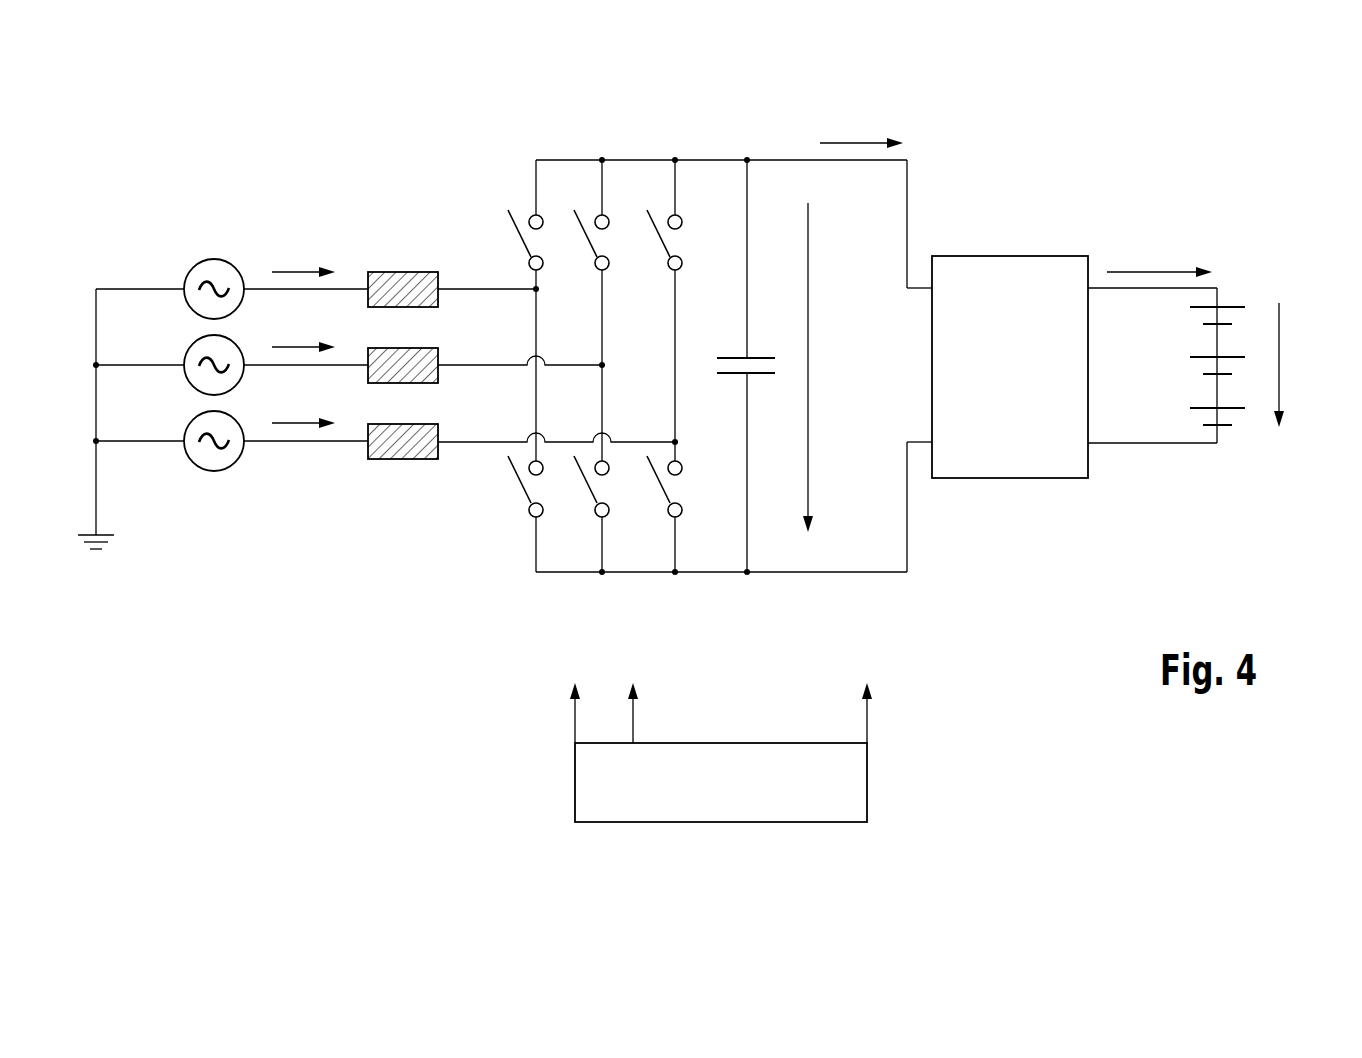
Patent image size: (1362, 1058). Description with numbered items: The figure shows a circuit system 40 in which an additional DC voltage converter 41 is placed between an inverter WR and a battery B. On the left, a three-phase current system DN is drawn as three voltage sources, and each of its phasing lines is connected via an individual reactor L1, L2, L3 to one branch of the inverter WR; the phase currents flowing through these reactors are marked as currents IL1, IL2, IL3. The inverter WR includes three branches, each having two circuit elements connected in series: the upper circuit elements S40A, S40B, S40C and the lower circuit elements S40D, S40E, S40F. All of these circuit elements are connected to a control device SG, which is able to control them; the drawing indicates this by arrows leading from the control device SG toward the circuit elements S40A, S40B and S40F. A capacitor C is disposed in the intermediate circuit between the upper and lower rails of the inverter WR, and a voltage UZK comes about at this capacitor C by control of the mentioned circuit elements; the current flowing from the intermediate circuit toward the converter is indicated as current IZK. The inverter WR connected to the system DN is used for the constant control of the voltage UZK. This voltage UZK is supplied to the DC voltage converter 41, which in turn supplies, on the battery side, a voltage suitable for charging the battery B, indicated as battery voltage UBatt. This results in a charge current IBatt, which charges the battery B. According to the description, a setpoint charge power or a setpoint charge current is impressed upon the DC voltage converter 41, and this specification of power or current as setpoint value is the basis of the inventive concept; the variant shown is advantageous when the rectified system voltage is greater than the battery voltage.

The three-phase current system DN is at (190, 212).
The reactor L1 is at (403, 272).
The reactor L2 is at (440, 360).
The reactor L3 is at (400, 460).
The phase current L1 IL1 is at (303, 252).
The phase current L2 IL2 is at (303, 327).
The phase current L3 IL3 is at (303, 403).
The inverter WR is at (680, 368).
The circuit element S40A is at (520, 237).
The circuit element S40B is at (585, 220).
The circuit element S40C is at (657, 220).
The circuit element S40D is at (520, 484).
The circuit element S40E is at (593, 492).
The circuit element S40F is at (665, 492).
The capacitor C is at (760, 362).
The voltage UZK is at (831, 367).
The intermediate circuit current IZK is at (861, 121).
The DC voltage converter 41 is at (1008, 256).
The battery B is at (1262, 278).
The charge current IBatt is at (1159, 252).
The battery voltage UBatt is at (1307, 365).
The circuit system 40 is at (1131, 560).
The control device SG is at (855, 799).